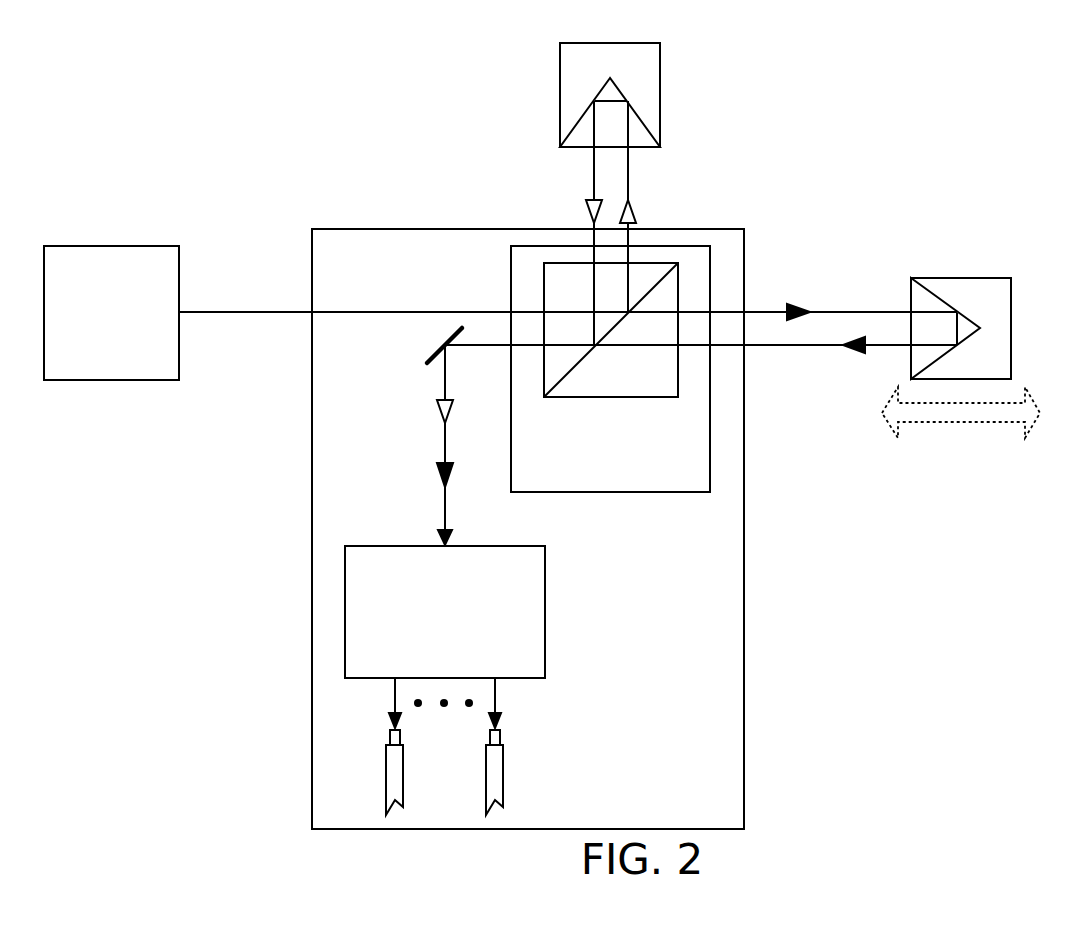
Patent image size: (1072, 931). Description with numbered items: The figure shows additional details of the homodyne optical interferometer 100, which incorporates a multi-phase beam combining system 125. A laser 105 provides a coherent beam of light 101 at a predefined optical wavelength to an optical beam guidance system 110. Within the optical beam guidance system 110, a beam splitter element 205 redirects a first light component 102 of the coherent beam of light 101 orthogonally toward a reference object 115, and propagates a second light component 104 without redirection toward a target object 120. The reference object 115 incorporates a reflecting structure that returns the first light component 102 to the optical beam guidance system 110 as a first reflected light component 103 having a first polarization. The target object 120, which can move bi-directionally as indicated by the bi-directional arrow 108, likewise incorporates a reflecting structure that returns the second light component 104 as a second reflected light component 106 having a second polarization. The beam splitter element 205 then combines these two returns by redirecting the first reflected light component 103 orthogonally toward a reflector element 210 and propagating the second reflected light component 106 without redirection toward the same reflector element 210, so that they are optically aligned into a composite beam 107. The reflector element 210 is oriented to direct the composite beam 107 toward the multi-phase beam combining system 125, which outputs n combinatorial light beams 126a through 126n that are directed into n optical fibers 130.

The homodyne optical interferometer 100 is at (528, 529).
The coherent beam of light 101 is at (247, 310).
The first light component 102 is at (631, 201).
The first reflected light component 103 is at (591, 201).
The second light component 104 is at (882, 310).
The laser 105 is at (111, 313).
The second reflected light component 106 is at (895, 348).
The composite beam 107 is at (447, 530).
The bi-directional arrow 108 is at (948, 423).
The optical beam guidance system 110 is at (610, 369).
The reference object 115 is at (626, 82).
The target object 120 is at (969, 311).
The multi-phase beam combining system 125 is at (445, 612).
The combinatorial light beam 126a is at (393, 692).
The combinatorial light beam 126n is at (497, 692).
The optical fibers 130 is at (552, 777).
The beam splitter element 205 is at (611, 330).
The reflector element 210 is at (435, 353).